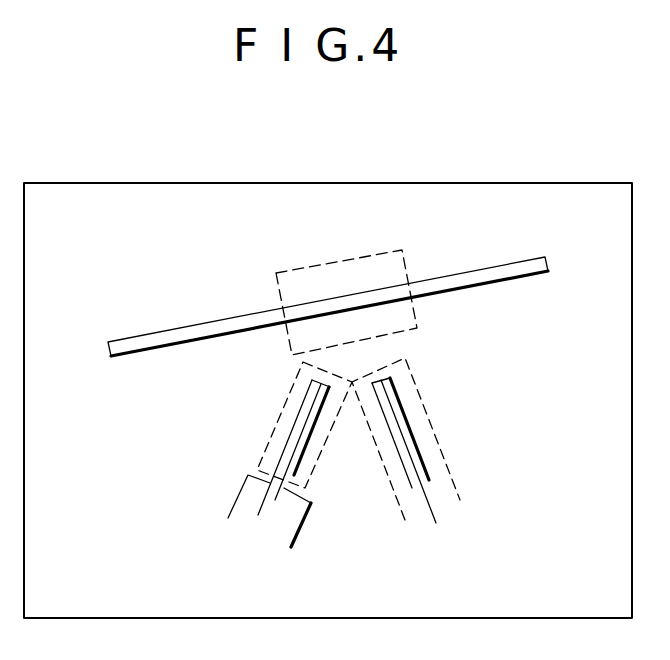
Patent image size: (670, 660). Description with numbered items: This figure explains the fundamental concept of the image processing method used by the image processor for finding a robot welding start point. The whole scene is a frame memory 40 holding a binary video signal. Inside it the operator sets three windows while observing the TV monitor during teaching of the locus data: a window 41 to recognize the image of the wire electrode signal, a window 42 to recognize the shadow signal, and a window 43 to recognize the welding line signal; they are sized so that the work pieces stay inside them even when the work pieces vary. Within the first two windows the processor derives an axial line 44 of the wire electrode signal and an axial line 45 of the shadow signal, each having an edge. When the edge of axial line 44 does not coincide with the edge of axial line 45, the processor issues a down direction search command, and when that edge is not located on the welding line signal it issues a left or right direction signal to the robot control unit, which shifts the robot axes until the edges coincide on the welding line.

The frame memory 40 is at (512, 183).
The window 43 is at (323, 262).
The window 41 is at (281, 410).
The window 42 is at (428, 415).
The axial line 44 is at (268, 503).
The axial line 45 is at (430, 508).